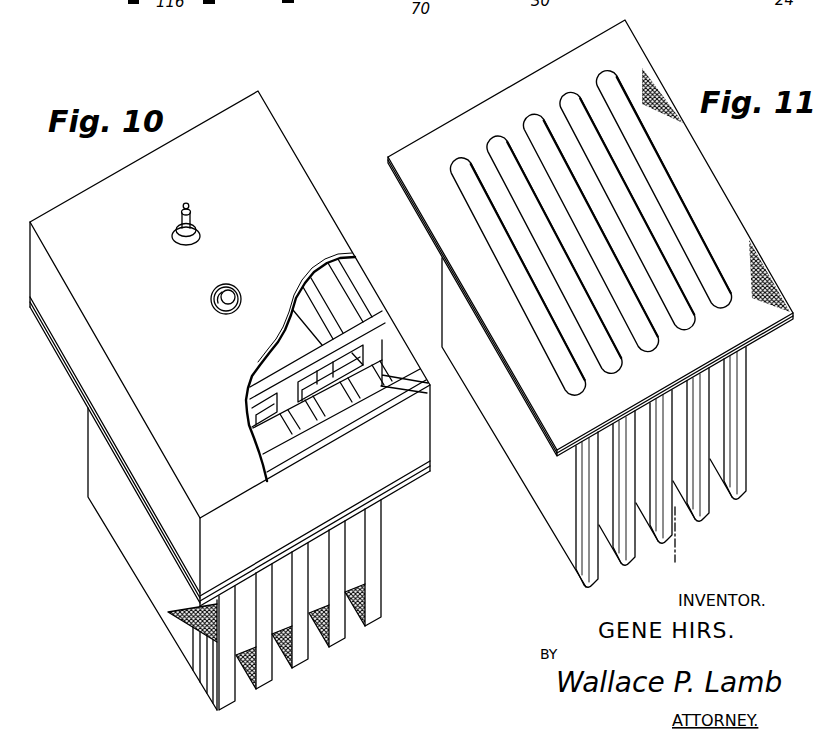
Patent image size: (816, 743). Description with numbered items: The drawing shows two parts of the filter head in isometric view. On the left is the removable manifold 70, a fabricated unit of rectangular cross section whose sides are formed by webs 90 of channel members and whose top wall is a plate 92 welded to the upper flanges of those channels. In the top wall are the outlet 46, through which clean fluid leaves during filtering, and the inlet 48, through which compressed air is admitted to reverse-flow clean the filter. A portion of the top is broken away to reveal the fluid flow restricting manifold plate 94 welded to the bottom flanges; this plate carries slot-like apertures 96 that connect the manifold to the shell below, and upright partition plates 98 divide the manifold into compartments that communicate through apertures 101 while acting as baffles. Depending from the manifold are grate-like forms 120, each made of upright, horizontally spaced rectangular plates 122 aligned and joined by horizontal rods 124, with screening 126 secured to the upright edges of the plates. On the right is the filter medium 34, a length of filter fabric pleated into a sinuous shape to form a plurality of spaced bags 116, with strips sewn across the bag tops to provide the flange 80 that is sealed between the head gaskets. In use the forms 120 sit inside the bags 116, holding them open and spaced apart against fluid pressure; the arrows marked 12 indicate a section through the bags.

In FIG. 10, the manifold 70 is at (280, 123).
In FIG. 10, the webs of channel members 90 is at (88, 316).
In FIG. 10, the plate 92 is at (340, 287).
In FIG. 10, the fluid flow restricting manifold plate 94 is at (331, 313).
In FIG. 10, the slot-like apertures 96 is at (295, 303).
In FIG. 10, the partitions or plates 98 is at (258, 441).
In FIG. 10, the apertures 101 is at (351, 356).
In FIG. 10, the inlet 48 is at (203, 223).
In FIG. 10, the outlet 46 is at (241, 290).
In FIG. 10, the upright rectangular plates 122 is at (210, 677).
In FIG. 10, the screening 126 is at (170, 623).
In FIG. 10, the horizontal rods 124 is at (205, 640).
In FIG. 10, the grille or grate-like forms 120 is at (216, 712).
In FIG. 11, the outer marginal portions 80 is at (495, 96).
In FIG. 11, the bags 116 is at (536, 503).
In FIG. 11, the filter medium 34 is at (748, 385).
In FIG. 11, the section line 12 is at (547, 557).